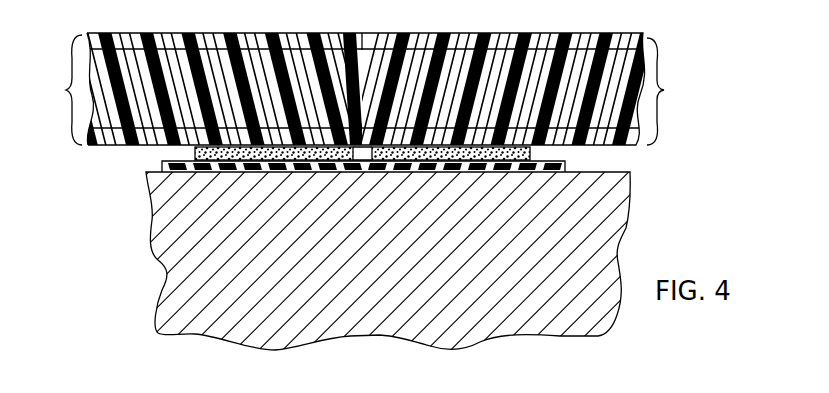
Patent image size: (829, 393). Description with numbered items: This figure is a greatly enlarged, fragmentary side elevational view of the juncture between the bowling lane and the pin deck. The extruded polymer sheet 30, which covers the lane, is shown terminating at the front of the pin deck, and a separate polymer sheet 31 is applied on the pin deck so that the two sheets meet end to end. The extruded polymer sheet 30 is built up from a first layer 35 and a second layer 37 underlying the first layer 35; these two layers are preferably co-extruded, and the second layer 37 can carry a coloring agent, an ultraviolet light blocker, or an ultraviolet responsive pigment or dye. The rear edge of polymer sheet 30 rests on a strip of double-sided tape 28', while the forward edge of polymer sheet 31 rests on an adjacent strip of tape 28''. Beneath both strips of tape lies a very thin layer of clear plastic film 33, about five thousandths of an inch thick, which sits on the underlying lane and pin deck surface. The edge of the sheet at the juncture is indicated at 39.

The extruded polymer sheet 30 is at (204, 89).
The separate polymer sheet 31 is at (522, 89).
The first layer 35 is at (198, 38).
The second layer 37 is at (253, 60).
The stack edge 39 is at (87, 146).
The double-sided tape 28' is at (217, 167).
The tape 28'' is at (541, 149).
The clear plastic film 33 is at (566, 168).